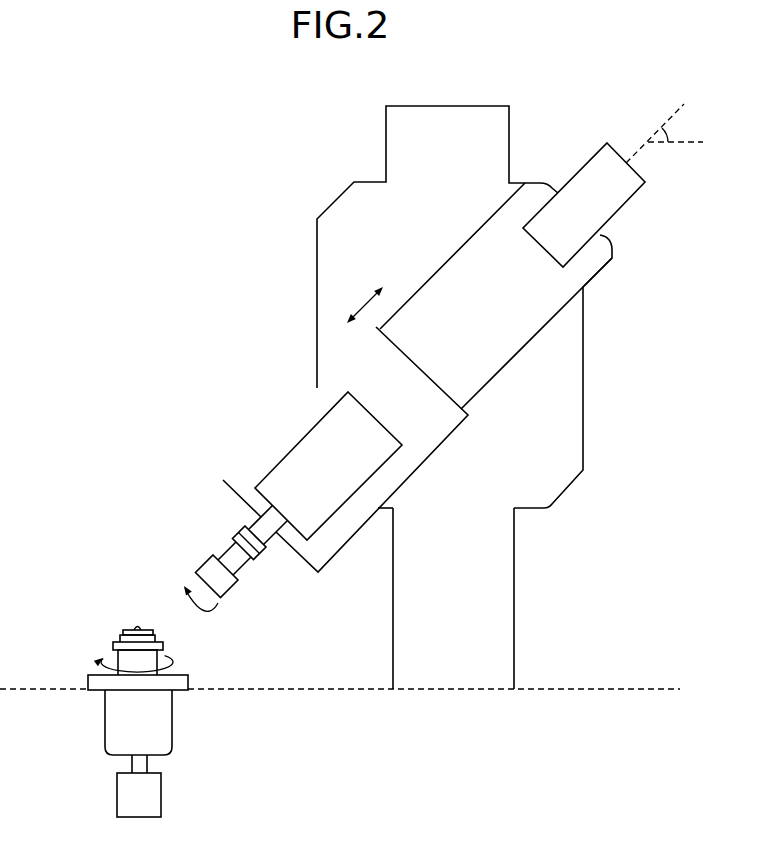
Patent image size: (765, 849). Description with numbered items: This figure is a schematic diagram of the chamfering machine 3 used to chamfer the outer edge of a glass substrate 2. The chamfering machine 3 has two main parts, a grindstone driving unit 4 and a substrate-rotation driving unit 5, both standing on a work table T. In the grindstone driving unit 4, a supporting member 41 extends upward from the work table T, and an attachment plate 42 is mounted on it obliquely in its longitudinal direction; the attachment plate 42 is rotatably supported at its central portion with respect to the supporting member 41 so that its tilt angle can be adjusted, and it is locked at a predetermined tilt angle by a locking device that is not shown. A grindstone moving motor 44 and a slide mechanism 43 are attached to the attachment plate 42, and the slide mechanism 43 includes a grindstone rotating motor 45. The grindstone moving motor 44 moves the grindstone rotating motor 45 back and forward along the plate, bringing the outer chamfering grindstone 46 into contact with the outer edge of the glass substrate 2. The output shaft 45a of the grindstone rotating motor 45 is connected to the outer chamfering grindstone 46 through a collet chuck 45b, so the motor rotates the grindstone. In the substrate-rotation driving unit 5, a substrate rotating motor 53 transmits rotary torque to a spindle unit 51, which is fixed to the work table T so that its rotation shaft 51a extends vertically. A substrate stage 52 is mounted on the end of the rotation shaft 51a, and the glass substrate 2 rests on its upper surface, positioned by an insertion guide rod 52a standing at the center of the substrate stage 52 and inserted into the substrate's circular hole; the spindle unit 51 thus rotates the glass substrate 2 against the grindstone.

The glass substrate 2 is at (126, 631).
The chamfering machine 3 is at (157, 119).
The grindstone driving unit 4 is at (354, 161).
The supporting member 41 is at (515, 612).
The attachment plate 42 is at (587, 285).
The slide mechanism 43 is at (281, 419).
The grindstone moving motor 44 is at (600, 232).
The grindstone rotating motor 45 is at (333, 518).
The output shaft 45a is at (250, 527).
The collet chuck 45b is at (264, 555).
The outer chamfering grindstone 46 is at (181, 554).
The substrate-rotation driving unit 5 is at (246, 740).
The spindle unit 51 is at (105, 727).
The rotation shaft 51a is at (147, 763).
The substrate stage 52 is at (163, 645).
The insertion guide rod 52a is at (138, 627).
The substrate rotating motor 53 is at (117, 797).
The work table T is at (644, 687).